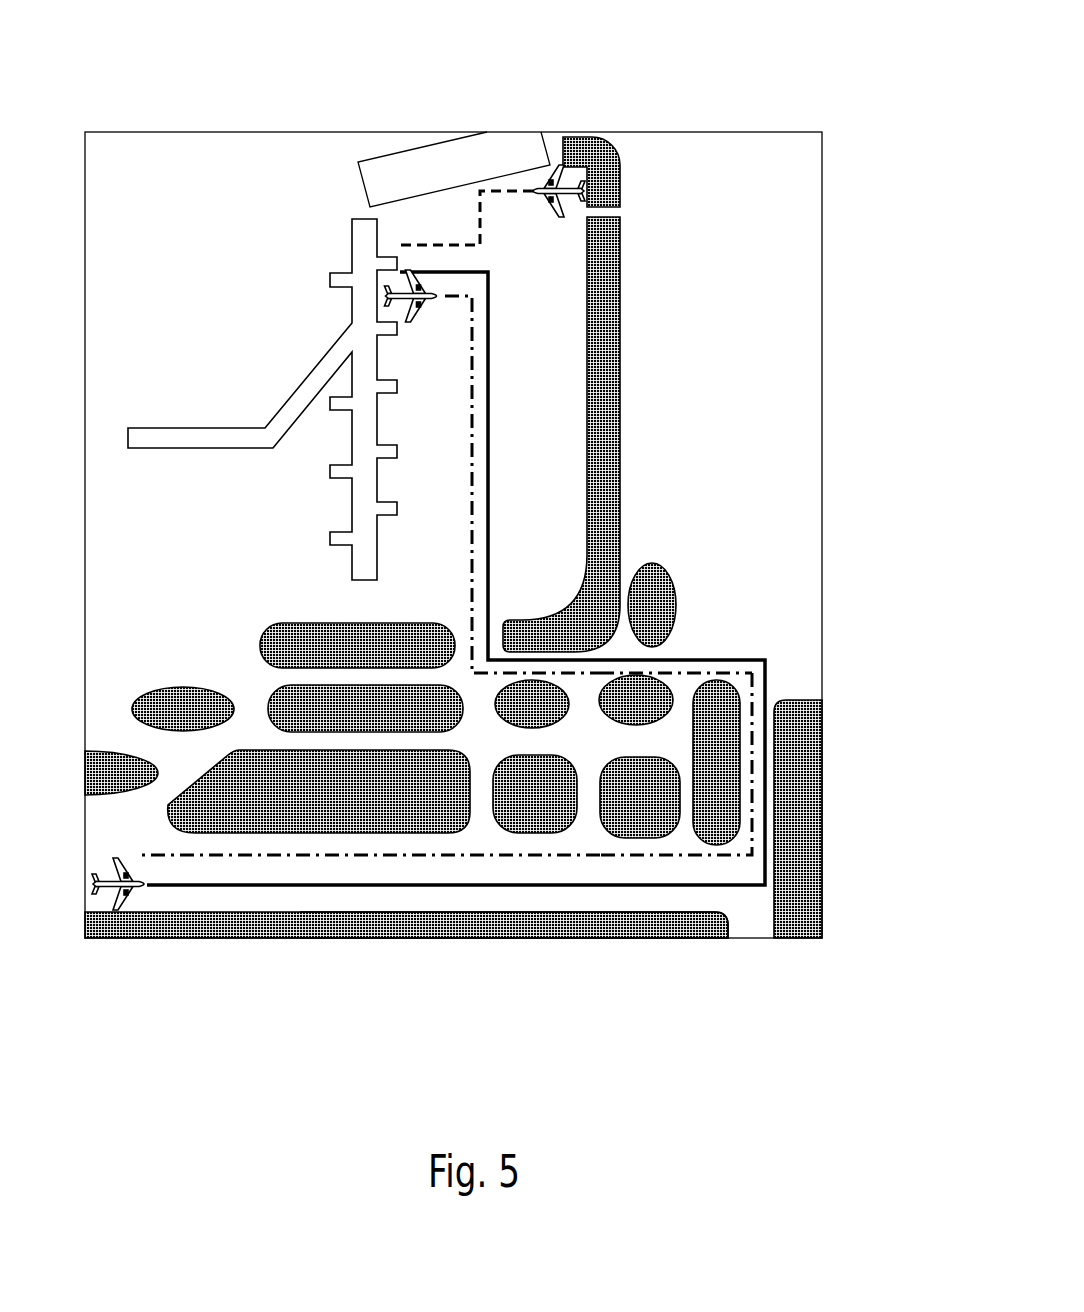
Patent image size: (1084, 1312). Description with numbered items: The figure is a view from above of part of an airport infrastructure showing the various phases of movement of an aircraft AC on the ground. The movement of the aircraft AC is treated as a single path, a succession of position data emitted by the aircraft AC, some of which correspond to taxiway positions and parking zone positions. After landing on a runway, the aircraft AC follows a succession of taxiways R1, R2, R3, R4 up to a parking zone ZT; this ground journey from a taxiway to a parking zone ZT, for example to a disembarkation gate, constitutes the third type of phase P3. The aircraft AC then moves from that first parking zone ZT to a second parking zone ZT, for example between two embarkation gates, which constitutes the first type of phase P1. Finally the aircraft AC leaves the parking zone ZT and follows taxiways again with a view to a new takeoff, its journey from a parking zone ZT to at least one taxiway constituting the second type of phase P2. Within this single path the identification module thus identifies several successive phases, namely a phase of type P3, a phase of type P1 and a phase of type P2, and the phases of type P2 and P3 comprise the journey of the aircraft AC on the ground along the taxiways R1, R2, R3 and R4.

The aircraft AC is at (576, 174).
The parking zone ZT is at (362, 294).
The first type of phase P1 is at (497, 172).
The second type of phase P2 is at (445, 597).
The third type of phase P3 is at (435, 916).
The taxiway R1 is at (632, 856).
The taxiway R2 is at (753, 676).
The taxiway R3 is at (703, 673).
The taxiway R4 is at (473, 447).